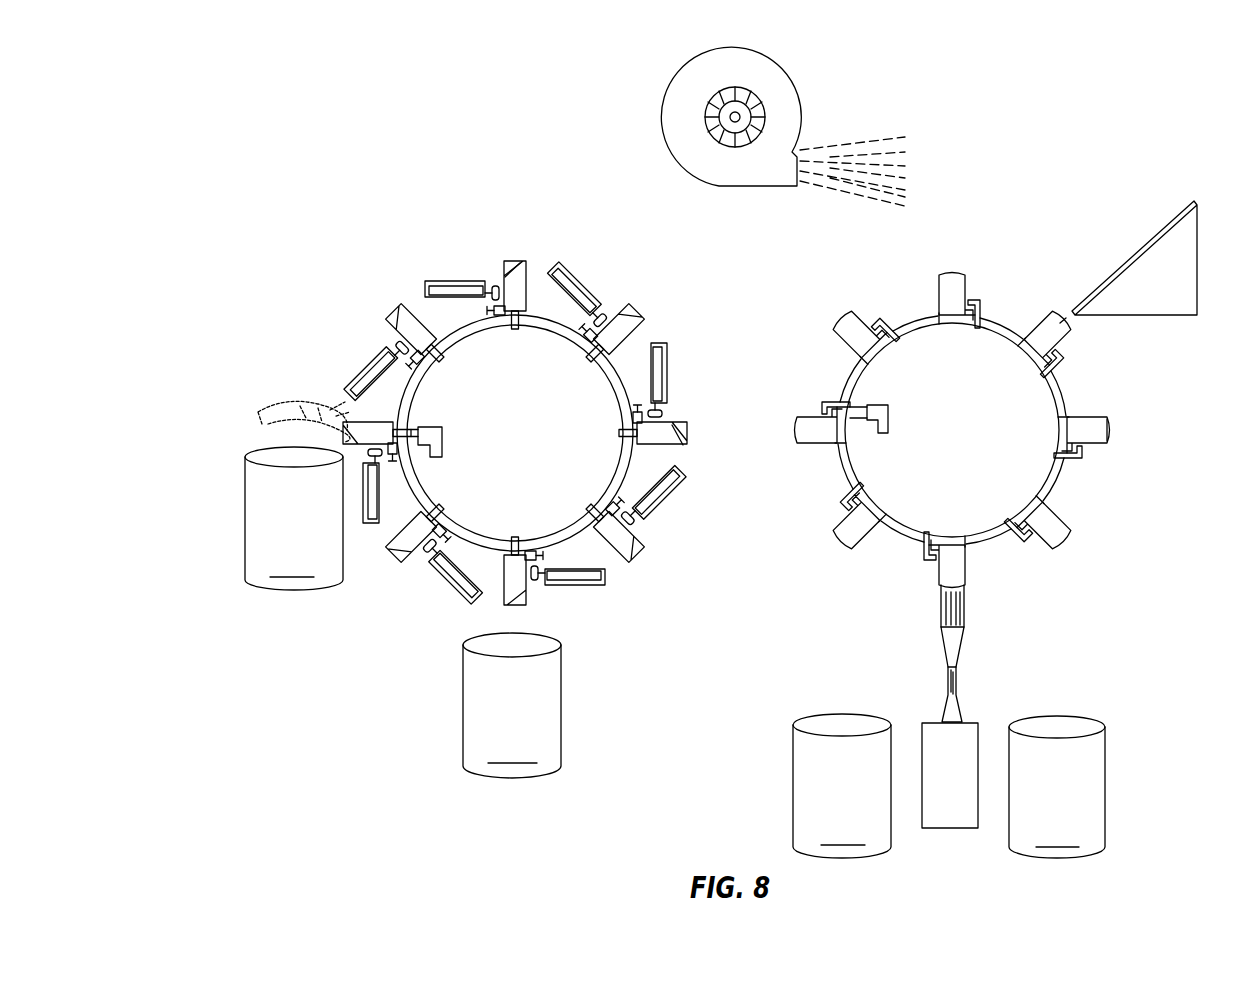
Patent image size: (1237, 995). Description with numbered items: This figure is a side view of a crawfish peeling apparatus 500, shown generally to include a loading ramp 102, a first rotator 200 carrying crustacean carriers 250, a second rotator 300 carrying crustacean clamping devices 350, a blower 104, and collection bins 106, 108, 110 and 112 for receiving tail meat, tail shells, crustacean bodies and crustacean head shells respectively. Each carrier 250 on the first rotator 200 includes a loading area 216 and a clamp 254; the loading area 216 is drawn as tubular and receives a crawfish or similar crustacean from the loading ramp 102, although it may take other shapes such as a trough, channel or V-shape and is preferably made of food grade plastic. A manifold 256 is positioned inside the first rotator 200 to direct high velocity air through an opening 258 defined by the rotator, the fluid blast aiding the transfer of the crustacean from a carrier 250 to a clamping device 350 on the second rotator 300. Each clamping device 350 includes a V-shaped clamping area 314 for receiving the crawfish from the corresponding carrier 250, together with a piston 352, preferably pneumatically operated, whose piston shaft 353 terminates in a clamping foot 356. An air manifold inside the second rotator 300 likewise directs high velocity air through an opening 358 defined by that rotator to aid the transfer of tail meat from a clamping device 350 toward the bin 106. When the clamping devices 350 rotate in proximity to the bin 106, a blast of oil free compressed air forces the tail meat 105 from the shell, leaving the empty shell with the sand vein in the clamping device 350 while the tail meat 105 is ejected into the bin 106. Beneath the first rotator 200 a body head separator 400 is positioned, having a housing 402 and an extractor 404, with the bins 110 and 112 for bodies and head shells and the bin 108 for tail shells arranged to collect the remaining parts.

The loading ramp 102 is at (1187, 306).
The blower 104 is at (788, 75).
The tail meat 105 is at (258, 418).
The collection bin 106 is at (294, 518).
The collection bin 108 is at (512, 705).
The collection bin 110 is at (842, 786).
The collection bin 112 is at (1057, 787).
The first rotator 200 is at (1075, 505).
The loading area 216 is at (1080, 322).
The carrier 250 is at (963, 270).
The clamp 254 is at (877, 325).
The manifold 256 is at (888, 428).
The opening 258 is at (1053, 457).
The second rotator 300 is at (365, 672).
The clamping area 314 is at (524, 258).
The clamping device 350 is at (598, 258).
The piston 352 is at (567, 277).
The piston shaft 353 is at (494, 290).
The clamping foot 356 is at (496, 305).
The opening 358 is at (508, 336).
The body head separator 400 is at (985, 660).
The housing 402 is at (960, 708).
The extractor 404 is at (942, 647).
The crawfish peeling apparatus 500 is at (378, 208).